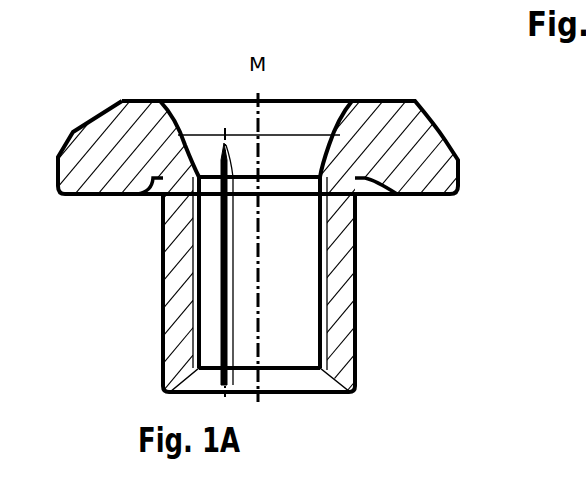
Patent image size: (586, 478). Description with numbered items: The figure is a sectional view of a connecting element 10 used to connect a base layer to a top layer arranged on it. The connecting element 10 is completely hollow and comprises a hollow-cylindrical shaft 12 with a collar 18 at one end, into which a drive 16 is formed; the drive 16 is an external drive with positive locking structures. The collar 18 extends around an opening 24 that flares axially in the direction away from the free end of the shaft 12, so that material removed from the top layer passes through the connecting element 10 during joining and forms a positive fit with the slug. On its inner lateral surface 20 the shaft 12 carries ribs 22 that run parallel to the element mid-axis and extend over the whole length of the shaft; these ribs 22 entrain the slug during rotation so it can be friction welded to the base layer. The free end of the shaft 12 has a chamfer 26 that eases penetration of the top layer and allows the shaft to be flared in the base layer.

The connecting element 10 is at (118, 72).
The hollow-cylindrical shaft 12 is at (340, 290).
The drive 16 is at (424, 122).
The collar 18 is at (405, 172).
The inner lateral surface 20 is at (212, 350).
The ribs 22 is at (228, 252).
The opening 24 is at (315, 101).
The chamfer 26 is at (322, 378).